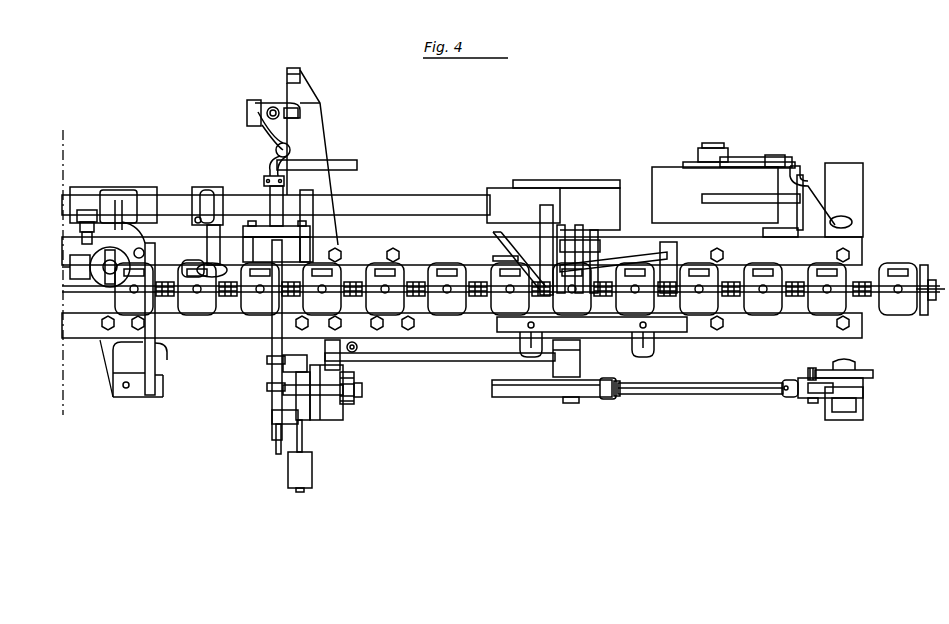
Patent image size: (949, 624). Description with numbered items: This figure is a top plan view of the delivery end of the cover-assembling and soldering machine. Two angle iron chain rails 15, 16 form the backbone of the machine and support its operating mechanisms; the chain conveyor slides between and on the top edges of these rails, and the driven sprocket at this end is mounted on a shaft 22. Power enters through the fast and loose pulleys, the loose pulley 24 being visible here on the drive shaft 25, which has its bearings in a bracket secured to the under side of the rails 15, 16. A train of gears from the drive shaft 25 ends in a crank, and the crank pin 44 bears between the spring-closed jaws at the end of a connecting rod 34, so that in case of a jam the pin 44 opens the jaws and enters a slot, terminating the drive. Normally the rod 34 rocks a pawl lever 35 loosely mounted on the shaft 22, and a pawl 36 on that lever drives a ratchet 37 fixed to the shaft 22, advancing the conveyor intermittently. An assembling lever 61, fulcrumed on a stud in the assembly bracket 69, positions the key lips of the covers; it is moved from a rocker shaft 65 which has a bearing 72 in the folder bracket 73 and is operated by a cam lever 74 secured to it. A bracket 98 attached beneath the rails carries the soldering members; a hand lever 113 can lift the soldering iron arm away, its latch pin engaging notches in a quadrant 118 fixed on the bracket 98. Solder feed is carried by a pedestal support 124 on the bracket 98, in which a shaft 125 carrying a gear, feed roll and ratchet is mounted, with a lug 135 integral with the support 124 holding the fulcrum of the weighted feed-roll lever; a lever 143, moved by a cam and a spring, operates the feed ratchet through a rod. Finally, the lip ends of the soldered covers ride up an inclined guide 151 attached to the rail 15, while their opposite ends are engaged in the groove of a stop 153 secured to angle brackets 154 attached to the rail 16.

The angle iron chain rail 15 is at (855, 327).
The angle iron chain rail 16 is at (855, 250).
The shaft 22 is at (818, 402).
The loose pulley 24 is at (667, 168).
The drive shaft 25 is at (720, 150).
The connecting rod 34 is at (637, 395).
The pawl lever 35 is at (863, 389).
The pawl 36 is at (873, 373).
The ratchet 37 is at (810, 374).
The crank pin 44 is at (567, 398).
The assembling lever 61 is at (70, 267).
The rocker shaft 65 is at (428, 198).
The assembly bracket 69 is at (110, 341).
The bearing 72 is at (537, 196).
The folder bracket 73 is at (546, 240).
The cam lever 74 is at (513, 190).
The bracket 98 is at (318, 149).
The hand lever 113 is at (294, 141).
The quadrant 118 is at (301, 76).
The pedestal support 124 is at (320, 420).
The shaft 125 is at (362, 391).
The lug 135 is at (320, 358).
The lever 143 is at (425, 361).
The inclined guide 151 is at (613, 258).
The stop 153 is at (679, 332).
The angle brackets 154 is at (665, 331).